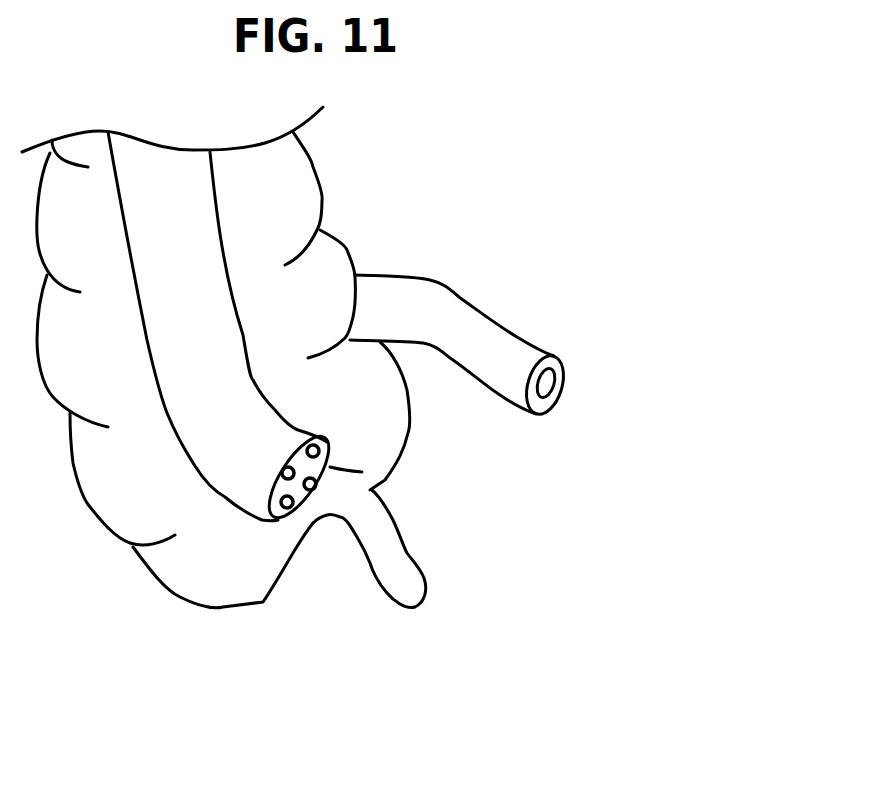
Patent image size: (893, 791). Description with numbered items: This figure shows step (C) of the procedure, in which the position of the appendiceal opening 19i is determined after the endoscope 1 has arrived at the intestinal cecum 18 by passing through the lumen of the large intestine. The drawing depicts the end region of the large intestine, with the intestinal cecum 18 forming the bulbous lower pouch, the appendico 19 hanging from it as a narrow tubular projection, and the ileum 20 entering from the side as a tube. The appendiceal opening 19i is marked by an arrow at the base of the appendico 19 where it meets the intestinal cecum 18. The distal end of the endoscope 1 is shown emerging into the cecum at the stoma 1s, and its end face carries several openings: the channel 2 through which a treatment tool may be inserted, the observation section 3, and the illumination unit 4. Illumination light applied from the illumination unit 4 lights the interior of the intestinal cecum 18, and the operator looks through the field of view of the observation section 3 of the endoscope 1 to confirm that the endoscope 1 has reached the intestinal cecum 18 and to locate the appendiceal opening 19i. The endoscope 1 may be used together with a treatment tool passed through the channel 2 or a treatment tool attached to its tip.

The endoscope 1 is at (198, 198).
The stoma 1s is at (292, 442).
The channel 2 is at (318, 450).
The observation section 3 is at (310, 485).
The illumination unit 4 is at (285, 475).
The intestinal cecum 18 is at (120, 500).
The appendico 19 is at (403, 580).
The appendiceal opening 19i is at (355, 518).
The ileum 20 is at (508, 348).